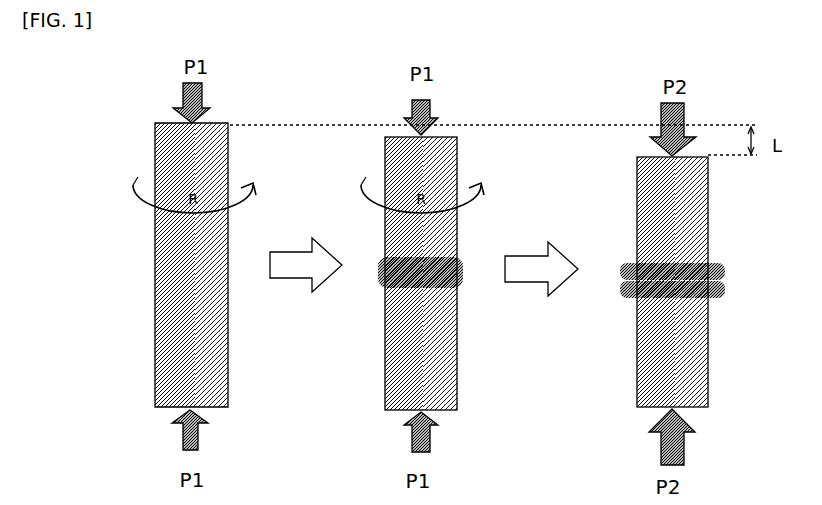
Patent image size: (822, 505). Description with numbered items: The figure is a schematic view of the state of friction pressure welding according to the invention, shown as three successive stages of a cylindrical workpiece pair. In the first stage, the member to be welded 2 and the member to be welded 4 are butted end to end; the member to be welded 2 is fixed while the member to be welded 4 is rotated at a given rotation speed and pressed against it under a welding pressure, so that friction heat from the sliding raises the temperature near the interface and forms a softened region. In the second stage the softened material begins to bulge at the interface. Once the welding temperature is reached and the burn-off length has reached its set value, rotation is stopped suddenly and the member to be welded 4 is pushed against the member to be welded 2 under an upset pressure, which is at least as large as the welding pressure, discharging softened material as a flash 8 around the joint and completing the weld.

The member to be welded 2 is at (160, 408).
The member to be welded 4 is at (160, 122).
The flash 8 is at (455, 290).